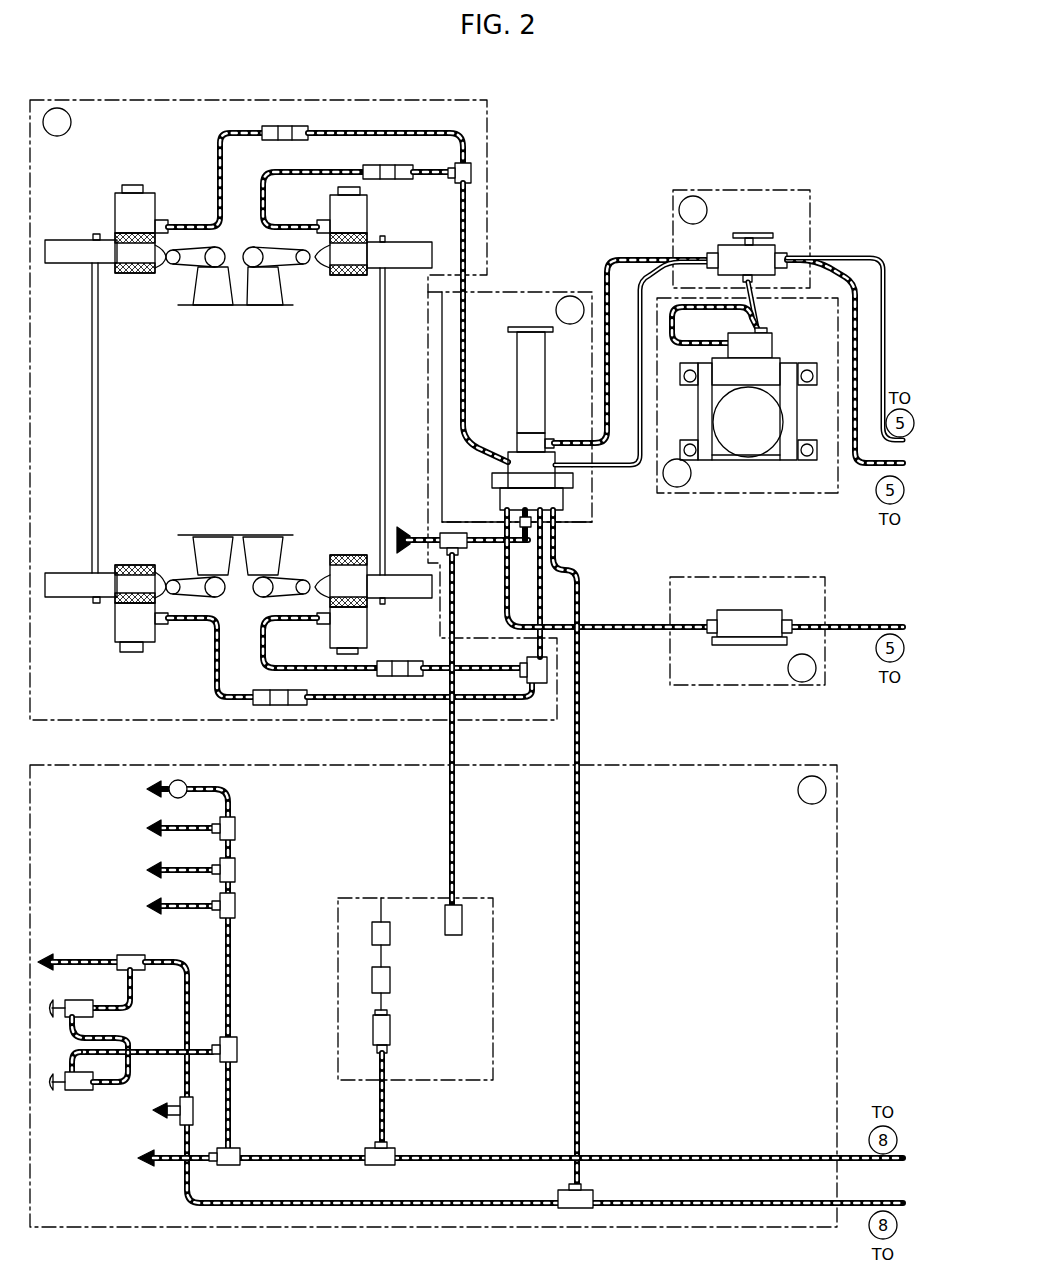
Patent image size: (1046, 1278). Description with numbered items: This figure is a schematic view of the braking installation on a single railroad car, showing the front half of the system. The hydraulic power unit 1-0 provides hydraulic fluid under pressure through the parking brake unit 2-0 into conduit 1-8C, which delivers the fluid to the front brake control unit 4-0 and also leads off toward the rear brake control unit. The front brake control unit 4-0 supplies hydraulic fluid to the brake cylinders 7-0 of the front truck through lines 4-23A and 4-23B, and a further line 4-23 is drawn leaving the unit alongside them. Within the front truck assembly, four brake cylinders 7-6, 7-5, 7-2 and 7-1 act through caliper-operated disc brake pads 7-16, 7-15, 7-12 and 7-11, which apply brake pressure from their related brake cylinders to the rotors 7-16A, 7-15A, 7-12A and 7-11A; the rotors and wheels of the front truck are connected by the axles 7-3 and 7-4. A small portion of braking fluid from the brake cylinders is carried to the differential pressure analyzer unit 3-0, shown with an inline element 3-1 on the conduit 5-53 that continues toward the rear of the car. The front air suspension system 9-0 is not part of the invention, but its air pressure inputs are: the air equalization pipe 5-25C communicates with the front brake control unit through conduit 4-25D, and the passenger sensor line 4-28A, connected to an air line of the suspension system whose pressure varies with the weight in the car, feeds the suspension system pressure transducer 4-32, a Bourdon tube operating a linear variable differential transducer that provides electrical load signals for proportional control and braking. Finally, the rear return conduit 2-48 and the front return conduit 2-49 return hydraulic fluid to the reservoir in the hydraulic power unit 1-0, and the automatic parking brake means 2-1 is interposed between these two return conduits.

The brake cylinders 7-0 is at (225, 100).
The brake cylinder 7-6 is at (128, 205).
The caliper-operated pad 7-16 is at (127, 243).
The rotor 7-16A is at (77, 258).
The brake cylinder 7-5 is at (355, 207).
The caliper-operated pad 7-15 is at (350, 260).
The rotor 7-15A is at (407, 262).
The axle 7-4 is at (99, 432).
The axle 7-3 is at (379, 432).
The rotor 7-12A is at (70, 556).
The caliper-operated pad 7-12 is at (128, 580).
The brake cylinder 7-2 is at (128, 623).
The caliper-operated pad 7-11 is at (318, 580).
The rotor 7-11A is at (410, 600).
The brake cylinder 7-1 is at (348, 637).
The front brake control unit 4-0 is at (527, 290).
The line 4-23B is at (463, 342).
The conduit 1-8C is at (554, 437).
The front return conduit 2-49 is at (582, 468).
The parking brake unit 2-0 is at (772, 190).
The automatic parking brake means 2-1 is at (780, 250).
The rear return conduit 2-48 is at (857, 268).
The hydraulic power unit 1-0 is at (763, 493).
The passenger sensor line 4-28A is at (488, 556).
The conduit 4-25D is at (562, 575).
The line 4-23A is at (545, 592).
The pump hose to filter 4-23 is at (645, 622).
The conduit 5-53 is at (857, 622).
The filter 3-1 is at (732, 645).
The differential pressure analyzer unit 3-0 is at (757, 688).
The front air suspension system 9-0 is at (640, 764).
The suspension system pressure transducer 4-32 is at (462, 918).
The air equalization pipe 5-25C is at (690, 1203).